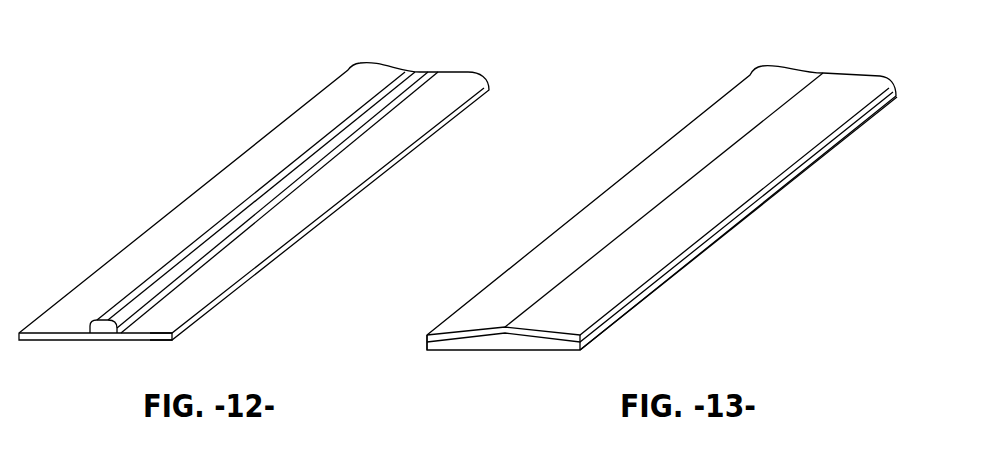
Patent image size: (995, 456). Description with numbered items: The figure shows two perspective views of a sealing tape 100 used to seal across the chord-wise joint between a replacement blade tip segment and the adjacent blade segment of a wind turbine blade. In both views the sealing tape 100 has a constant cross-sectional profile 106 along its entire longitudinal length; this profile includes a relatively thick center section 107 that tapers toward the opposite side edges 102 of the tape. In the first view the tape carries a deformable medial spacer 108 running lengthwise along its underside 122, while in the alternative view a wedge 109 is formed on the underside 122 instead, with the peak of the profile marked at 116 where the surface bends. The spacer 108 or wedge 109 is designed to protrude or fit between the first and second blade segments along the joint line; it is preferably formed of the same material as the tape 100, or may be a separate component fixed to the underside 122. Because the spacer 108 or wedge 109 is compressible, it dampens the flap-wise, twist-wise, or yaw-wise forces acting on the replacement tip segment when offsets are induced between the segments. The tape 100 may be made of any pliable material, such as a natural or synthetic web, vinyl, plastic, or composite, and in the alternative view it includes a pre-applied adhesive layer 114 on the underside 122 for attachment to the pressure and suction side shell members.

In FIG. 12, the sealing tape 100 is at (208, 121).
In FIG. 13, the sealing tape 100 is at (615, 121).
In FIG. 12, the side edges 102 is at (153, 226).
In FIG. 13, the side edges 102 is at (562, 226).
In FIG. 12, the cross-sectional profile 106 is at (164, 340).
In FIG. 13, the cross-sectional profile 106 is at (414, 349).
In FIG. 13, the center section 107 is at (503, 346).
In FIG. 12, the medial spacer 108 is at (132, 300).
In FIG. 13, the wedge 109 is at (558, 283).
In FIG. 13, the pre-applied adhesive layer 114 is at (690, 260).
In FIG. 13, the bend apex 116 is at (505, 326).
In FIG. 12, the underside 122 is at (322, 115).
In FIG. 13, the underside 122 is at (728, 115).